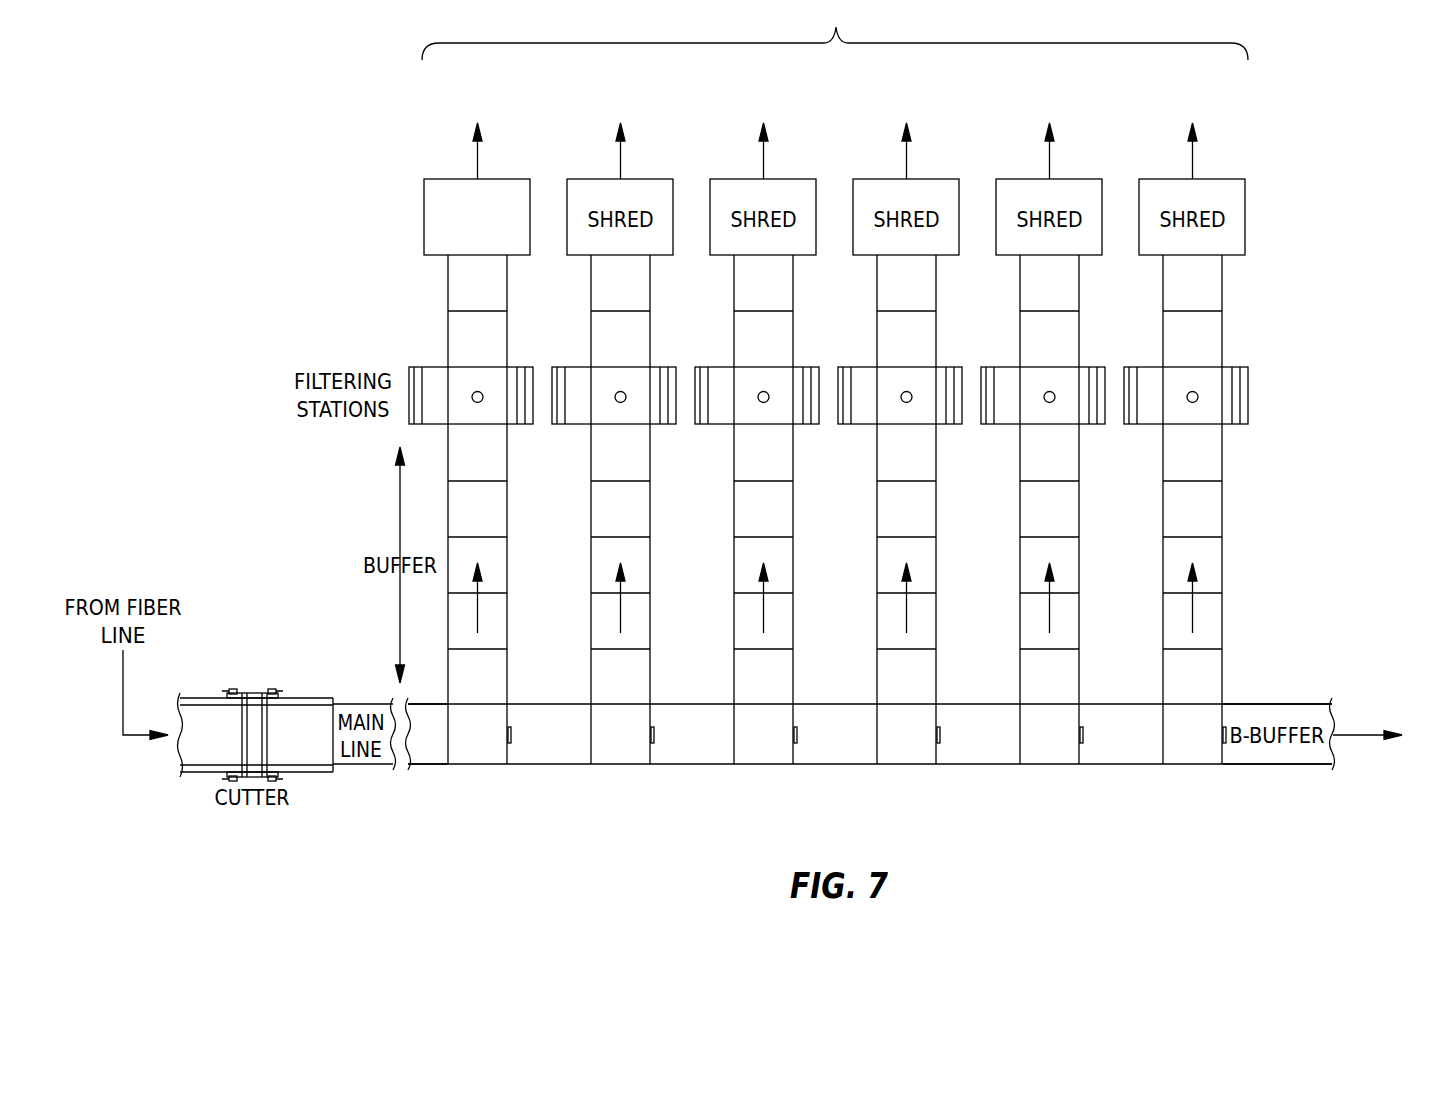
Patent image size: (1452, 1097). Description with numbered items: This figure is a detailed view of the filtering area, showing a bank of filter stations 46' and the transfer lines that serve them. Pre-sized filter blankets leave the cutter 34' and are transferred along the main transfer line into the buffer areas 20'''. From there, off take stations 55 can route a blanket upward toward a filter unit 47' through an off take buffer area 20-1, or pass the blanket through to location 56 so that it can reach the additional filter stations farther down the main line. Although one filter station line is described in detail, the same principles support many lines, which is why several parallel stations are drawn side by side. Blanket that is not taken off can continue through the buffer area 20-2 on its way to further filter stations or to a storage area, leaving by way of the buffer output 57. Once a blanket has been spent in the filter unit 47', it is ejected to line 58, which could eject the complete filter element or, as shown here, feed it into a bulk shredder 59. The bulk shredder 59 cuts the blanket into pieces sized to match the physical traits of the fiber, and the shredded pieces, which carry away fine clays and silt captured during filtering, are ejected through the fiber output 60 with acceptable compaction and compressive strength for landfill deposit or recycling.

The filter stations 46' is at (835, 31).
The fiber output 60 is at (477, 139).
The bulk shredder 59 is at (424, 213).
The line 58 is at (448, 289).
The filter unit 47' is at (446, 373).
The off take buffer area 20-1 is at (447, 507).
The cutter 34' is at (252, 702).
The buffer area 20-2 is at (1270, 705).
The buffer output 57 is at (1384, 737).
The location 56 is at (553, 764).
The off take stations 55 is at (475, 764).
The buffer areas 20''' is at (410, 780).